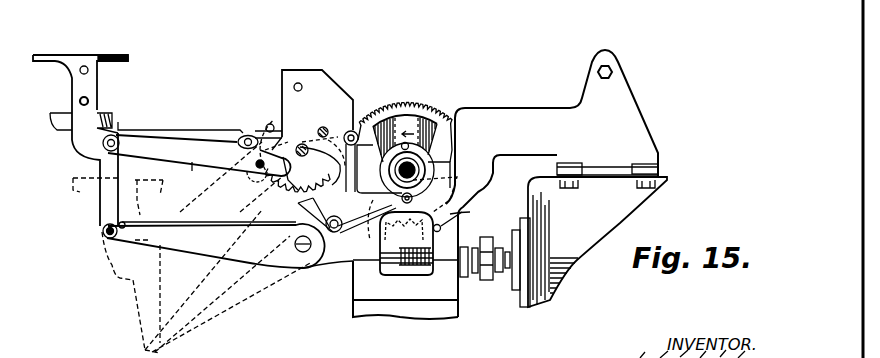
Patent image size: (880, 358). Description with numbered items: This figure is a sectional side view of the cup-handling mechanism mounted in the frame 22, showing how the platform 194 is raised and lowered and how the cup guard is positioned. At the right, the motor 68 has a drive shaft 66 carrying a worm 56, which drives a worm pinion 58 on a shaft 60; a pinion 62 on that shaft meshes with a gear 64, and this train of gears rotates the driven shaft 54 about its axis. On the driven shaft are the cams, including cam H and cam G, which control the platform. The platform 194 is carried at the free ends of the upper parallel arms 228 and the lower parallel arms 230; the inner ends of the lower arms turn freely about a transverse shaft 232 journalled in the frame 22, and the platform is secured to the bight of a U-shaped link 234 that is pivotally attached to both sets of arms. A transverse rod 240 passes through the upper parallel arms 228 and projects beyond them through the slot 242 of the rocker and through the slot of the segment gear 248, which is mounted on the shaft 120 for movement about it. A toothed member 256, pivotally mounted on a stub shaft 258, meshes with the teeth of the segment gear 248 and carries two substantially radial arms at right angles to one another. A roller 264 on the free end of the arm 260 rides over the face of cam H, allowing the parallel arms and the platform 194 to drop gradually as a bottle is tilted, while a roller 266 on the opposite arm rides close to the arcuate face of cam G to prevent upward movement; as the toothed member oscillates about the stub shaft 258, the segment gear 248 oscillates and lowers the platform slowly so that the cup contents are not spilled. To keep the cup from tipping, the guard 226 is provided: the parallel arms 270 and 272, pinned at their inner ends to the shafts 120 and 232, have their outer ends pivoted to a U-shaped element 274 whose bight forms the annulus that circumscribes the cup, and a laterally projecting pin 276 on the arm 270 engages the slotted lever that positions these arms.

The frame 22 is at (523, 112).
The driven shaft 54 is at (420, 166).
The worm 56 is at (413, 262).
The worm pinion 58 is at (466, 228).
The shaft 60 is at (470, 214).
The pinion 62 is at (383, 263).
The gear 64 is at (404, 235).
The drive shaft 66 is at (503, 278).
The motor 68 is at (620, 203).
The shaft 120 is at (297, 145).
The platform 194 is at (62, 115).
The guard 226 is at (46, 57).
The upper parallel arms 228 is at (196, 138).
The lower parallel arms 230 is at (177, 222).
The transverse shaft 232 is at (303, 253).
The U-shaped link 234 is at (126, 129).
The transverse rod 240 is at (249, 136).
The slot 242 is at (271, 121).
The segment gear 248 is at (315, 128).
The toothed member 256 is at (380, 208).
The stub shaft 258 is at (337, 231).
The arm 260 is at (353, 163).
The roller 264 is at (354, 130).
The roller 266 is at (418, 185).
The parallel arm 270 is at (206, 173).
The parallel arm 272 is at (207, 255).
The U-shaped element 274 is at (85, 147).
The laterally projecting pin 276 is at (257, 163).
The cam G is at (437, 118).
The cam H is at (397, 123).